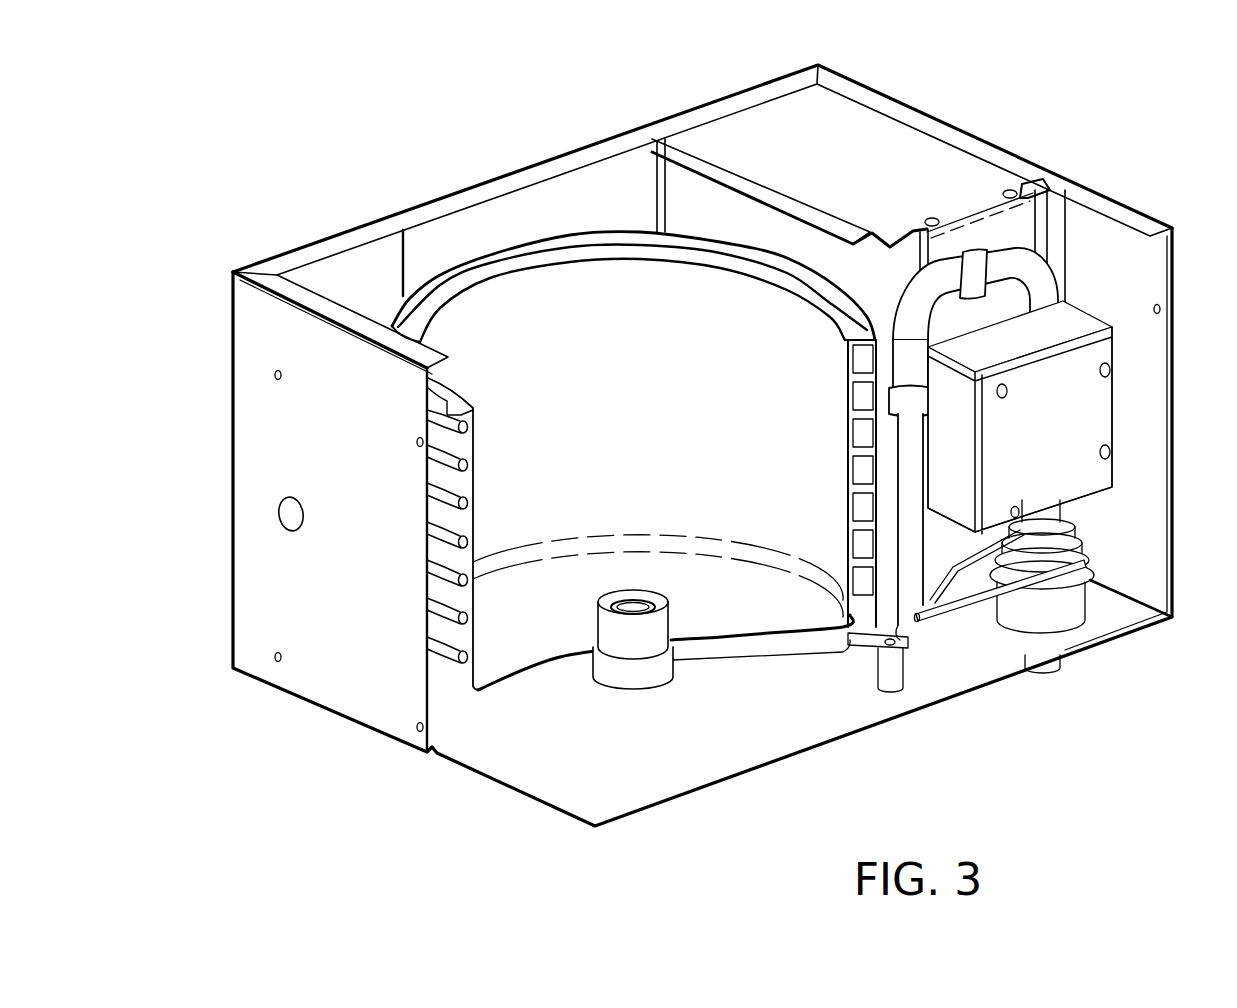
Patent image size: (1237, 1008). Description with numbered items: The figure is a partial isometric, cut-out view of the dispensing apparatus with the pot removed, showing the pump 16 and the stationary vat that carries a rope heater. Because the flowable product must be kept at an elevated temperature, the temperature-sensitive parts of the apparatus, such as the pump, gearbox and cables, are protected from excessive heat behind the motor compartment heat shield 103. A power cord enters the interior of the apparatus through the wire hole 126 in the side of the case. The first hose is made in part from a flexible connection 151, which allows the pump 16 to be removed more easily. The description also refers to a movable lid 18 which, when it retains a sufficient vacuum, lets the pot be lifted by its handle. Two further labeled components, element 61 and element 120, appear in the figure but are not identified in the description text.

The housing 61 is at (783, 144).
The motor compartment heat shield 103 is at (688, 192).
The flexible connection 151 is at (915, 277).
The pump 16 is at (1087, 410).
The wire hole 126 is at (283, 514).
The movable lid 18 is at (976, 612).
The drain fitting 120 is at (652, 627).